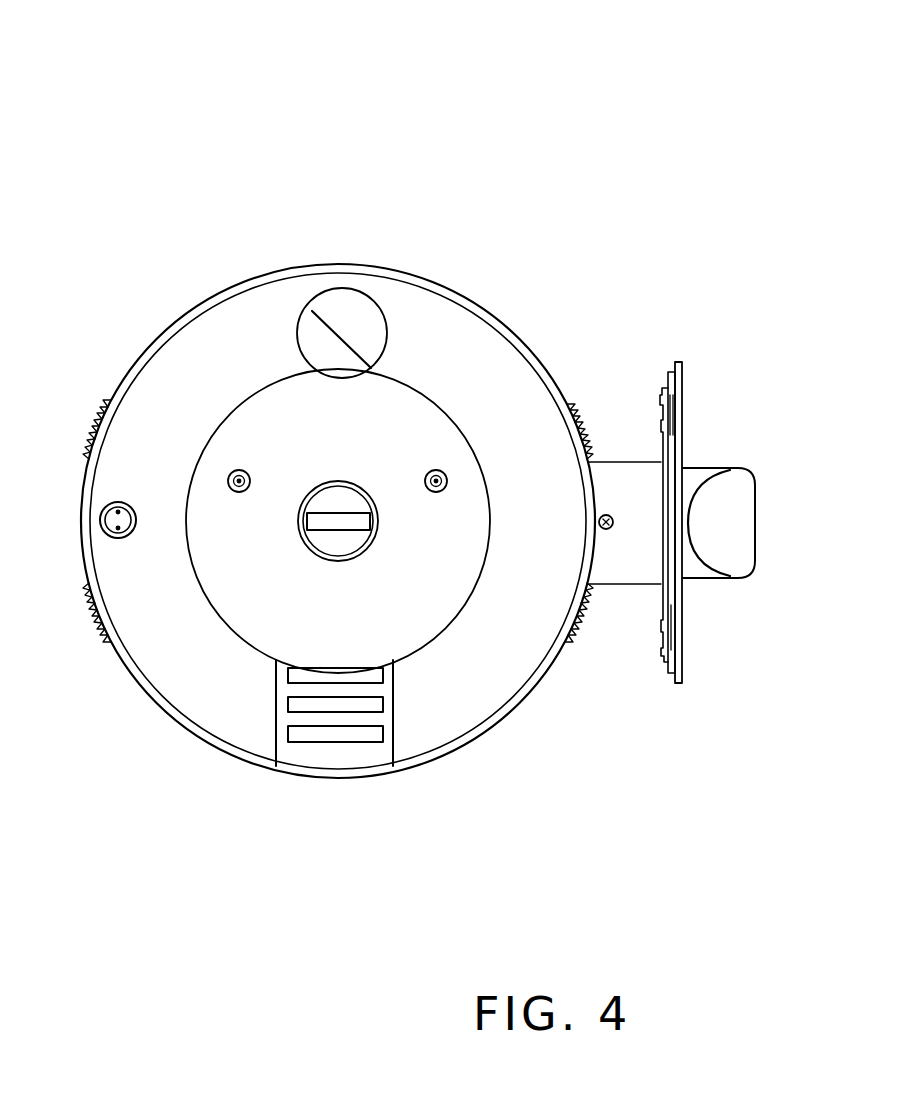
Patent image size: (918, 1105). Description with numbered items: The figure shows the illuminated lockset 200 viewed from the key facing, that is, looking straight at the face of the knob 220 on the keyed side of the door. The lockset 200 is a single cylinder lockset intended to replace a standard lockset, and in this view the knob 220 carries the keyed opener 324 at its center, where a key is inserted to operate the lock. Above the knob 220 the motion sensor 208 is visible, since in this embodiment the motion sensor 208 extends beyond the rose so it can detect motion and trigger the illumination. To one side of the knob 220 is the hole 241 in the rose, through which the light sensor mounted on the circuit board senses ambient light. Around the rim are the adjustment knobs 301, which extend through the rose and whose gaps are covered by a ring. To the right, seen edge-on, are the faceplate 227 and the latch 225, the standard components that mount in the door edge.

The lockset 200 is at (547, 115).
The motion sensor 208 is at (351, 292).
The knob 220 is at (437, 445).
The keyed opener 324 is at (345, 500).
The hole 241 is at (117, 508).
The adjustment knobs 301 is at (586, 423).
The faceplate 227 is at (684, 645).
The latch 225 is at (748, 537).